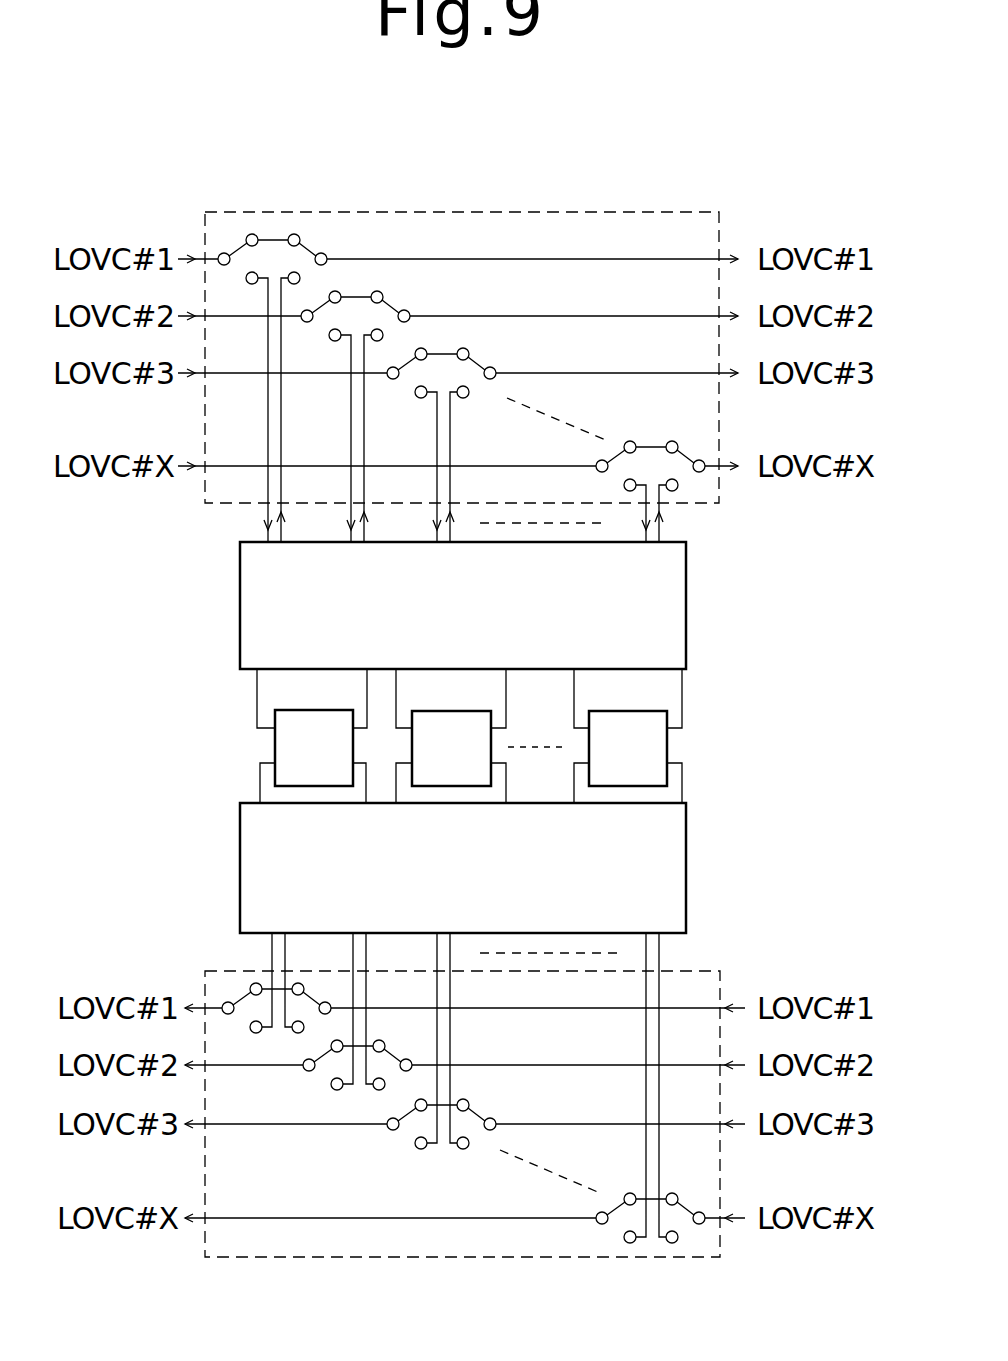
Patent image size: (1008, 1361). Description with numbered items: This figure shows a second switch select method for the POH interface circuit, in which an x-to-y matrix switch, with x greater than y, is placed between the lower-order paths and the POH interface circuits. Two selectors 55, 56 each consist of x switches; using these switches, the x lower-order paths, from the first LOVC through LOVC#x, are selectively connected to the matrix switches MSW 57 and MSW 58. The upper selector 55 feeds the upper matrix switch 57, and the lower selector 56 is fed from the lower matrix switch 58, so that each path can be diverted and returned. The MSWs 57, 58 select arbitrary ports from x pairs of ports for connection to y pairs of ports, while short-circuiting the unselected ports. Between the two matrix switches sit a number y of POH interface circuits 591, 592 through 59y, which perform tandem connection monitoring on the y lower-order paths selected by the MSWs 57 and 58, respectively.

The selector 55 is at (690, 210).
The selector 56 is at (683, 1260).
The matrix switch (MSW) 57 is at (240, 560).
The matrix switch (MSW) 58 is at (240, 826).
The POH interface circuit 591 is at (275, 747).
The POH interface circuit 592 is at (415, 711).
The POH interface circuit 59y is at (667, 745).